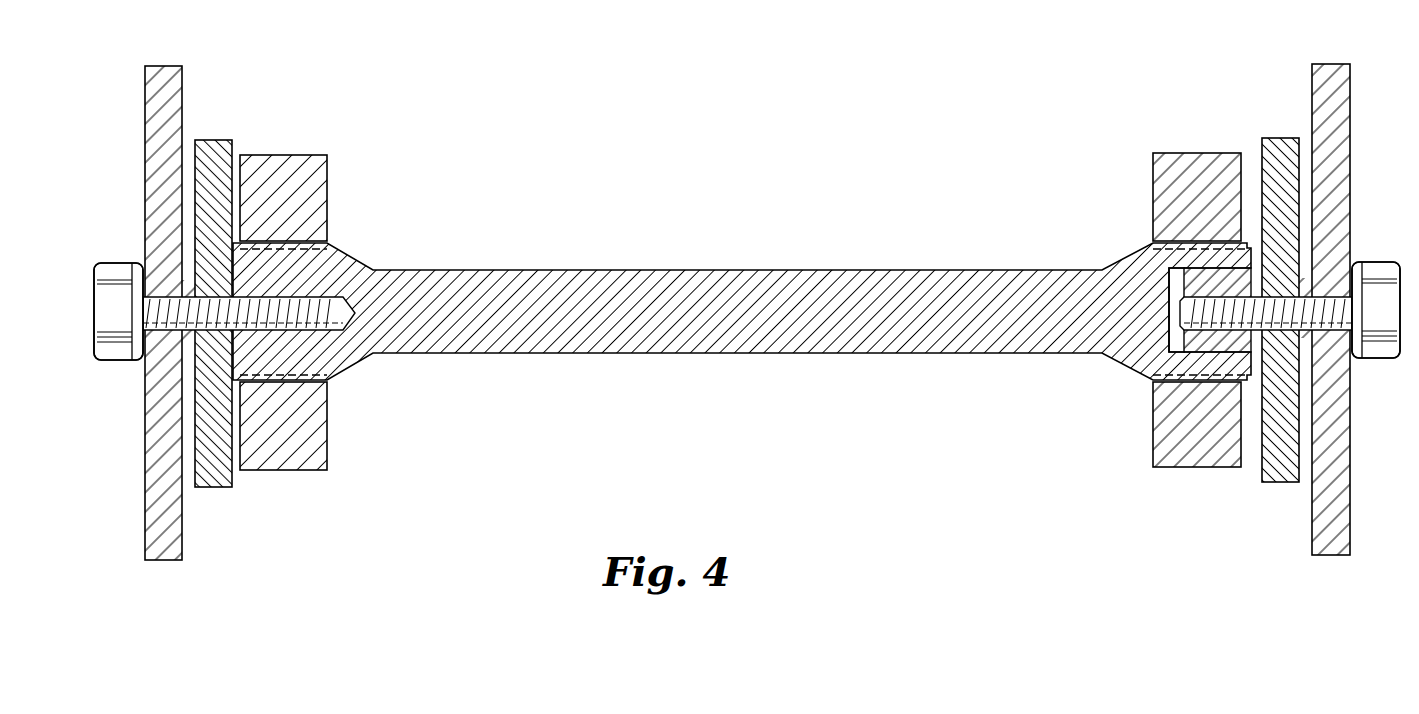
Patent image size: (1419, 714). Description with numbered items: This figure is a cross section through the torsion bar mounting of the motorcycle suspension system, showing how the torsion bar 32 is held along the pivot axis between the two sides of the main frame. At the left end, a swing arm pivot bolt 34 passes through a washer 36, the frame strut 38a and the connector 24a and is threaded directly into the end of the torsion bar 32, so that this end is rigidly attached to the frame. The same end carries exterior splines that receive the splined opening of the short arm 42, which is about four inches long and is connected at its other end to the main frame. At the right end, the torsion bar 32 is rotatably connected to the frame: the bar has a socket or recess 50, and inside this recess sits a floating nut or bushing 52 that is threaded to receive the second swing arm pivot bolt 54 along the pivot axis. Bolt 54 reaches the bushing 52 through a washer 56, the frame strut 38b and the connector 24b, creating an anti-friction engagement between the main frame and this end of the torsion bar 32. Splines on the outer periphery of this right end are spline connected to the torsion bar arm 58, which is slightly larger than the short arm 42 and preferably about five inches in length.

The connector 24a is at (215, 147).
The connector 24b is at (1264, 150).
The torsion bar 32 is at (757, 270).
The swing arm pivot bolt 34 is at (113, 362).
The washer 36 is at (138, 262).
The frame strut 38a is at (180, 92).
The frame strut 38b is at (1345, 103).
The short arm 42 is at (320, 175).
The socket or recess 50 is at (1175, 335).
The bushing 52 is at (1200, 282).
The swing arm pivot bolt 54 is at (1383, 358).
The washer 56 is at (1352, 262).
The torsion bar arm 58 is at (1165, 445).